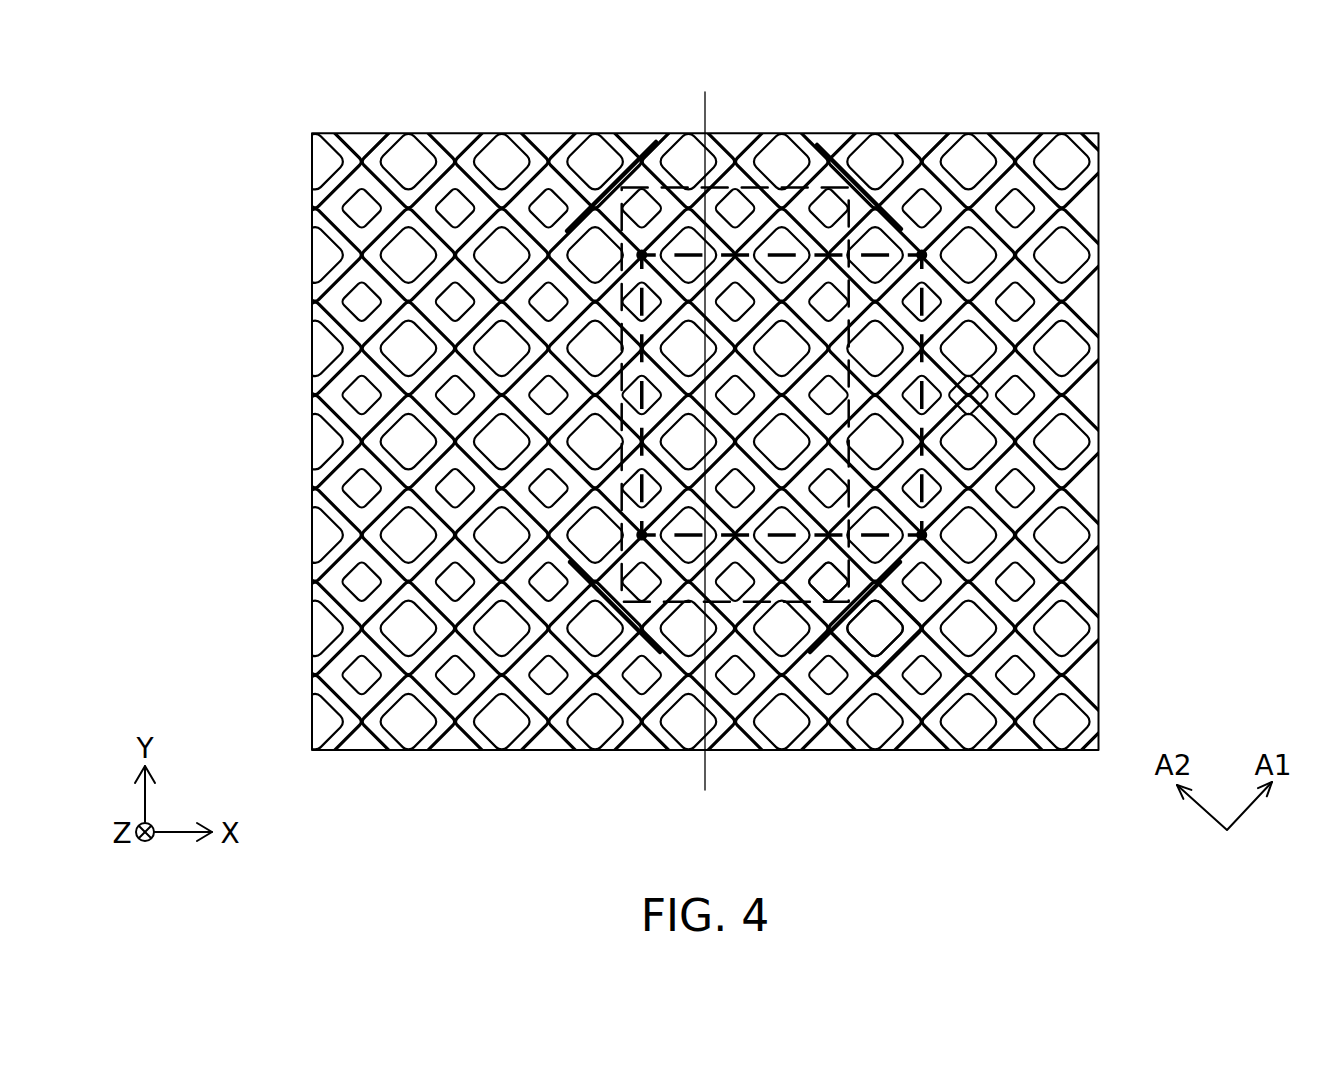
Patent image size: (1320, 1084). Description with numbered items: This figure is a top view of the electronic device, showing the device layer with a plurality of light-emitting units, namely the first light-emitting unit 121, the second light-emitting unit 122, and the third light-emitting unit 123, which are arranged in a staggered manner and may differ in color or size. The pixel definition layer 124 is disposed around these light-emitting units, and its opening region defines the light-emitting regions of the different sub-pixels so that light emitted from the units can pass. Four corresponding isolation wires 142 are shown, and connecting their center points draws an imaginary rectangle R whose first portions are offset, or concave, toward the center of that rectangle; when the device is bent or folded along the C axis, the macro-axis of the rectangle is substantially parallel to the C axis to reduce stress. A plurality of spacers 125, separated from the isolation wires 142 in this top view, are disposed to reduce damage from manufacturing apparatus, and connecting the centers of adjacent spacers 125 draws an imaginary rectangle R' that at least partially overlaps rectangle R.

The first light-emitting unit 121 is at (878, 628).
The second light-emitting unit 122 is at (828, 585).
The third light-emitting unit 123 is at (878, 523).
The pixel definition layer 124 is at (878, 663).
The spacer 125 is at (642, 255).
The isolation wire 142 is at (612, 187).